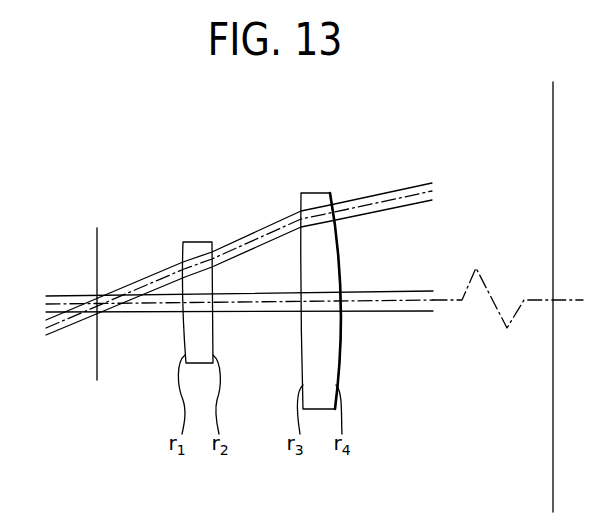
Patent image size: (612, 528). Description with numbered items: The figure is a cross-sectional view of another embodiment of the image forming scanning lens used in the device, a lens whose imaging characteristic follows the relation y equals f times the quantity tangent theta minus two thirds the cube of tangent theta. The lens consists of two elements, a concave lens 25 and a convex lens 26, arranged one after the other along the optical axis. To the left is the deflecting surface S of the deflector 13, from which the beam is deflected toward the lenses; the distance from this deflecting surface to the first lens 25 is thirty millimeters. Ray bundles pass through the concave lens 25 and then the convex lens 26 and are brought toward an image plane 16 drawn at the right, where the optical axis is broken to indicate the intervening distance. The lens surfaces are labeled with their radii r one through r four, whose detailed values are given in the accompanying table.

The deflector 13 is at (97, 370).
The image plane 16 is at (552, 113).
The concave lens 25 is at (196, 243).
The convex lens 26 is at (315, 203).